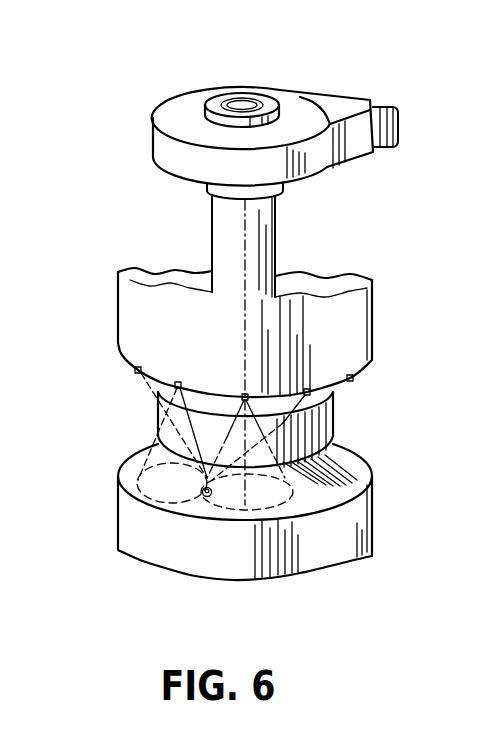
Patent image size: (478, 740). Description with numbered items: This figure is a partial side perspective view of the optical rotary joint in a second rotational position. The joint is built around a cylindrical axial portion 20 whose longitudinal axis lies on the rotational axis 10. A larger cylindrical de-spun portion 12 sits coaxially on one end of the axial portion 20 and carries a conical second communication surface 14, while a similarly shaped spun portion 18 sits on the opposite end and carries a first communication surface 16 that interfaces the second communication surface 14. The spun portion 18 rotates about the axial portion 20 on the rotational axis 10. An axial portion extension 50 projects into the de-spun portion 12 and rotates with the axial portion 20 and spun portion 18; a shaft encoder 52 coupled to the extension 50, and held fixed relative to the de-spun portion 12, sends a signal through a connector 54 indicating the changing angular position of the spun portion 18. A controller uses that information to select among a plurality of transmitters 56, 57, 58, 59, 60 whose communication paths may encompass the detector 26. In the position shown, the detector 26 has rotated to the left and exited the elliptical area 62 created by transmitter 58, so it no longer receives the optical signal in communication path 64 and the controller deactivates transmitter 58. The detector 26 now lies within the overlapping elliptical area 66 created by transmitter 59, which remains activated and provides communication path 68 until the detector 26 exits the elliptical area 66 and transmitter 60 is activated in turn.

The rotational axis 10 is at (245, 272).
The de-spun portion 12 is at (350, 303).
The second communication surface 14 is at (328, 390).
The first communication surface 16 is at (358, 478).
The spun portion 18 is at (355, 540).
The axial portion 20 is at (333, 428).
The detector 26 is at (207, 497).
The axial portion extension 50 is at (226, 228).
The shaft encoder 52 is at (197, 102).
The connector 54 is at (386, 104).
The transmitter 56 is at (355, 377).
The transmitter 57 is at (308, 388).
The transmitter 58 is at (243, 394).
The transmitter 59 is at (175, 386).
The transmitter 60 is at (135, 370).
The elliptical area 62 is at (257, 502).
The communication path 64 is at (207, 485).
The elliptical area 66 is at (160, 488).
The communication path 68 is at (150, 450).